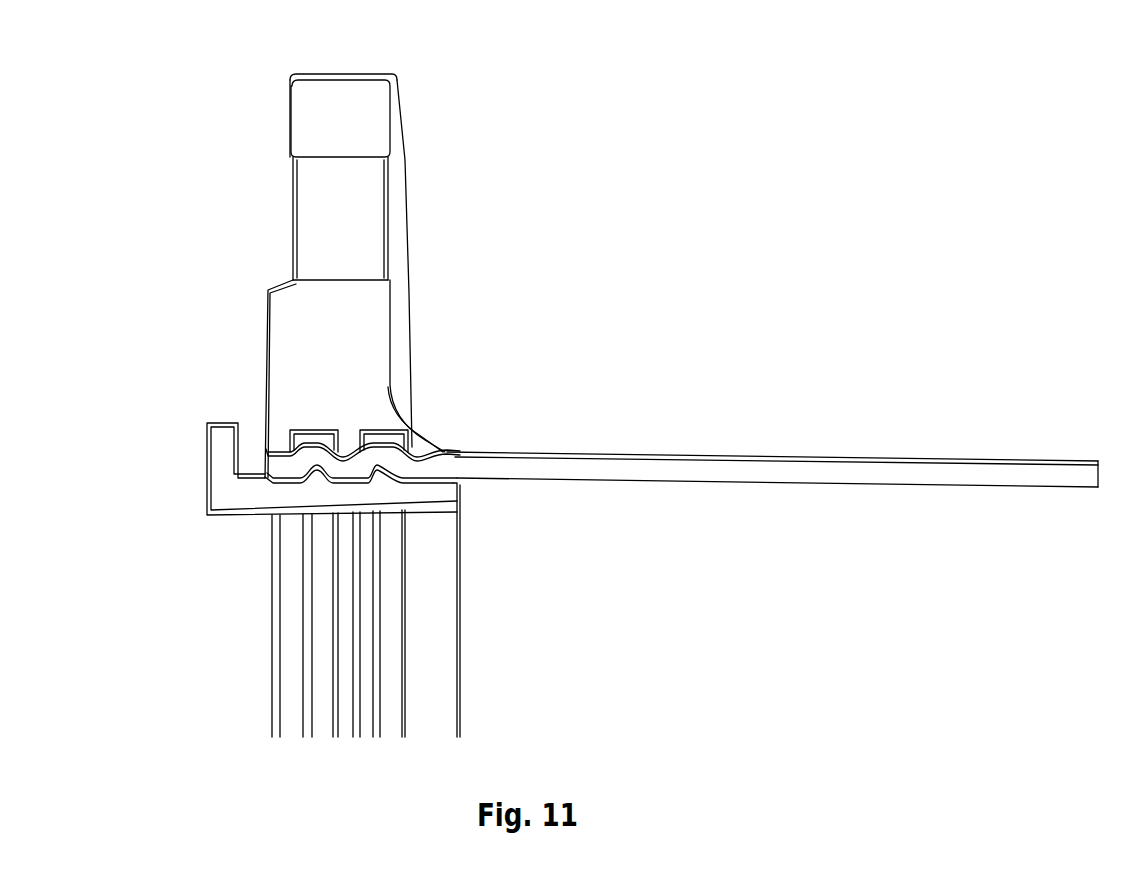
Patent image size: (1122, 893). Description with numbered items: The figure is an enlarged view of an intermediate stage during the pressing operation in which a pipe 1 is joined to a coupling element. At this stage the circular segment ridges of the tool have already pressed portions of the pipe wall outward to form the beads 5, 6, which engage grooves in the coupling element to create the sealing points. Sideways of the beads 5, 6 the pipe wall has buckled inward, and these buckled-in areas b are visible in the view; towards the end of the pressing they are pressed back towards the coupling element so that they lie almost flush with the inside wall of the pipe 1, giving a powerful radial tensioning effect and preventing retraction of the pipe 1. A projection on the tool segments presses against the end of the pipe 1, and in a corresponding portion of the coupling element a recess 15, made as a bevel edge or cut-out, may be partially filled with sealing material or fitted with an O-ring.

The pipe 1 is at (550, 470).
The bead 5 is at (375, 460).
The bead 6 is at (343, 453).
The recess 15 is at (275, 448).
The buckled-in areas b is at (418, 472).